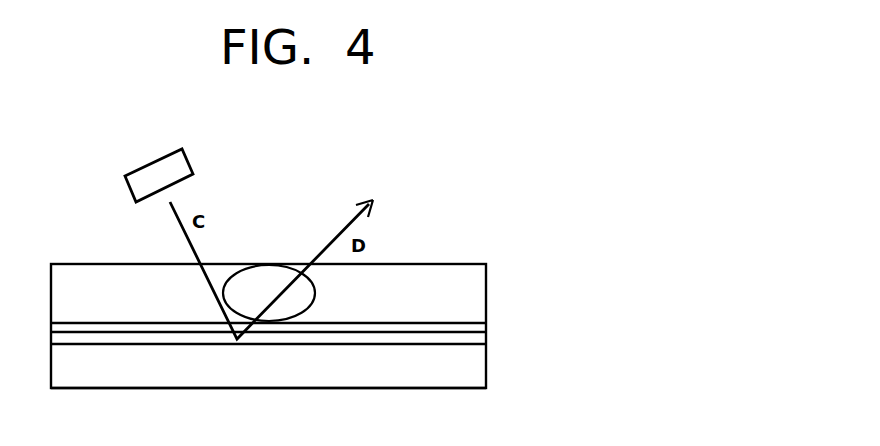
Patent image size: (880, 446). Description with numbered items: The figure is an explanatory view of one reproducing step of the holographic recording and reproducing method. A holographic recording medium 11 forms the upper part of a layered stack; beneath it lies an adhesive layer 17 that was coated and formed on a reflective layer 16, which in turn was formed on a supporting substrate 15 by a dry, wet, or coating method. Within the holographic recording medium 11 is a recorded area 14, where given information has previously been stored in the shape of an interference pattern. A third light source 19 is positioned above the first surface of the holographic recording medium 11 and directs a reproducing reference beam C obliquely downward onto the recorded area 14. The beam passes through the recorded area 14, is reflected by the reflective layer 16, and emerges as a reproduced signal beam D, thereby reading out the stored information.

The holographic recording medium 11 is at (481, 292).
The recorded area 14 is at (262, 277).
The supporting substrate 15 is at (482, 366).
The reflective layer 16 is at (482, 339).
The adhesive layer 17 is at (482, 329).
The third light source 19 is at (157, 170).